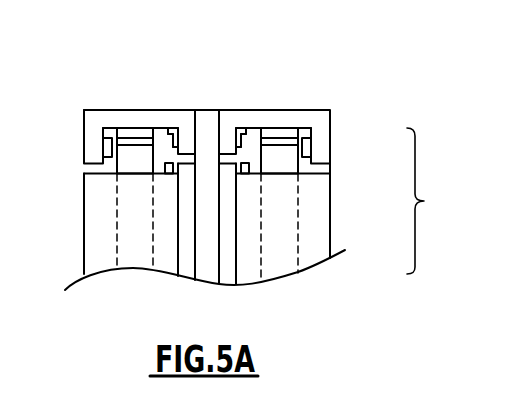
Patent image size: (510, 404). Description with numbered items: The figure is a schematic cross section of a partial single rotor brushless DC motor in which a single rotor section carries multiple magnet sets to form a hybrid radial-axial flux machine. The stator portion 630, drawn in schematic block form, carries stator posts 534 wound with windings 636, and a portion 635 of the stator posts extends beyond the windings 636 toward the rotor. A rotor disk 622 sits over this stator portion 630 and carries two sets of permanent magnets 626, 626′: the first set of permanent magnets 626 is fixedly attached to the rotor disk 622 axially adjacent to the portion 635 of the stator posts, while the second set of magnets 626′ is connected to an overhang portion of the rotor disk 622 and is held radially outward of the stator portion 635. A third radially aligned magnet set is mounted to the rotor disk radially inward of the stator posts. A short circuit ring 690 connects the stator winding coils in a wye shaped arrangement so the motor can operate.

The rotor disk 622 is at (256, 110).
The first set of permanent magnets 626 is at (123, 117).
The second set of magnets 626′ is at (103, 147).
The short circuit ring 690 is at (167, 164).
The portion of the stator posts 635 is at (290, 160).
The stator posts 534 is at (302, 208).
The stator portion 630 is at (439, 201).
The windings 636 is at (322, 234).